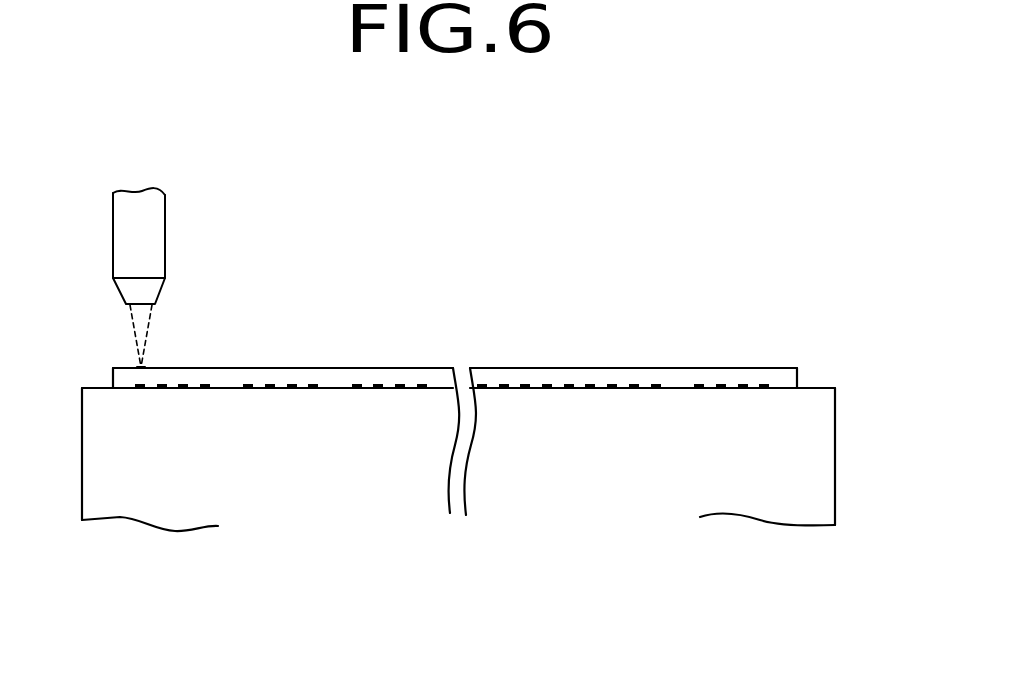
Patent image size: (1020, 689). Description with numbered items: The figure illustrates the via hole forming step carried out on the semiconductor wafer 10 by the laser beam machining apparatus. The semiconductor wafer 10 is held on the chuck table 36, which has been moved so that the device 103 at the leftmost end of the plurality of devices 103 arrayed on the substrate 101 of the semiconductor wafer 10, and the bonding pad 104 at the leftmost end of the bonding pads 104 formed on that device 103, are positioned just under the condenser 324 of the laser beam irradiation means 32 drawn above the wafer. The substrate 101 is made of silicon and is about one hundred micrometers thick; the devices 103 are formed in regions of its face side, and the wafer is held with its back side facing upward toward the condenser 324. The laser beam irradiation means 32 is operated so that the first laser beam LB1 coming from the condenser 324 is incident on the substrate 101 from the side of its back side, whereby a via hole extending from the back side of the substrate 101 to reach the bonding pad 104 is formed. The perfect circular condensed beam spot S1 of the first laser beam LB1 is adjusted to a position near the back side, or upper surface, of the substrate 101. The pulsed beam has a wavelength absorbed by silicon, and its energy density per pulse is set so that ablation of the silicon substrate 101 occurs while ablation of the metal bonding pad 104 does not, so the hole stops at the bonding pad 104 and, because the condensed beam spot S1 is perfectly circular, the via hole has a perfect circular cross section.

The laser beam irradiation unit 32 is at (192, 212).
The condenser 324 is at (152, 222).
The first laser beam LB1 is at (150, 329).
The perfect circular condensed beam spot S1 is at (140, 367).
The semiconductor wafer 10 is at (460, 370).
The substrate 101 is at (752, 367).
The devices 103 is at (175, 390).
The bonding pads 104 is at (140, 391).
The chuck table 36 is at (808, 457).